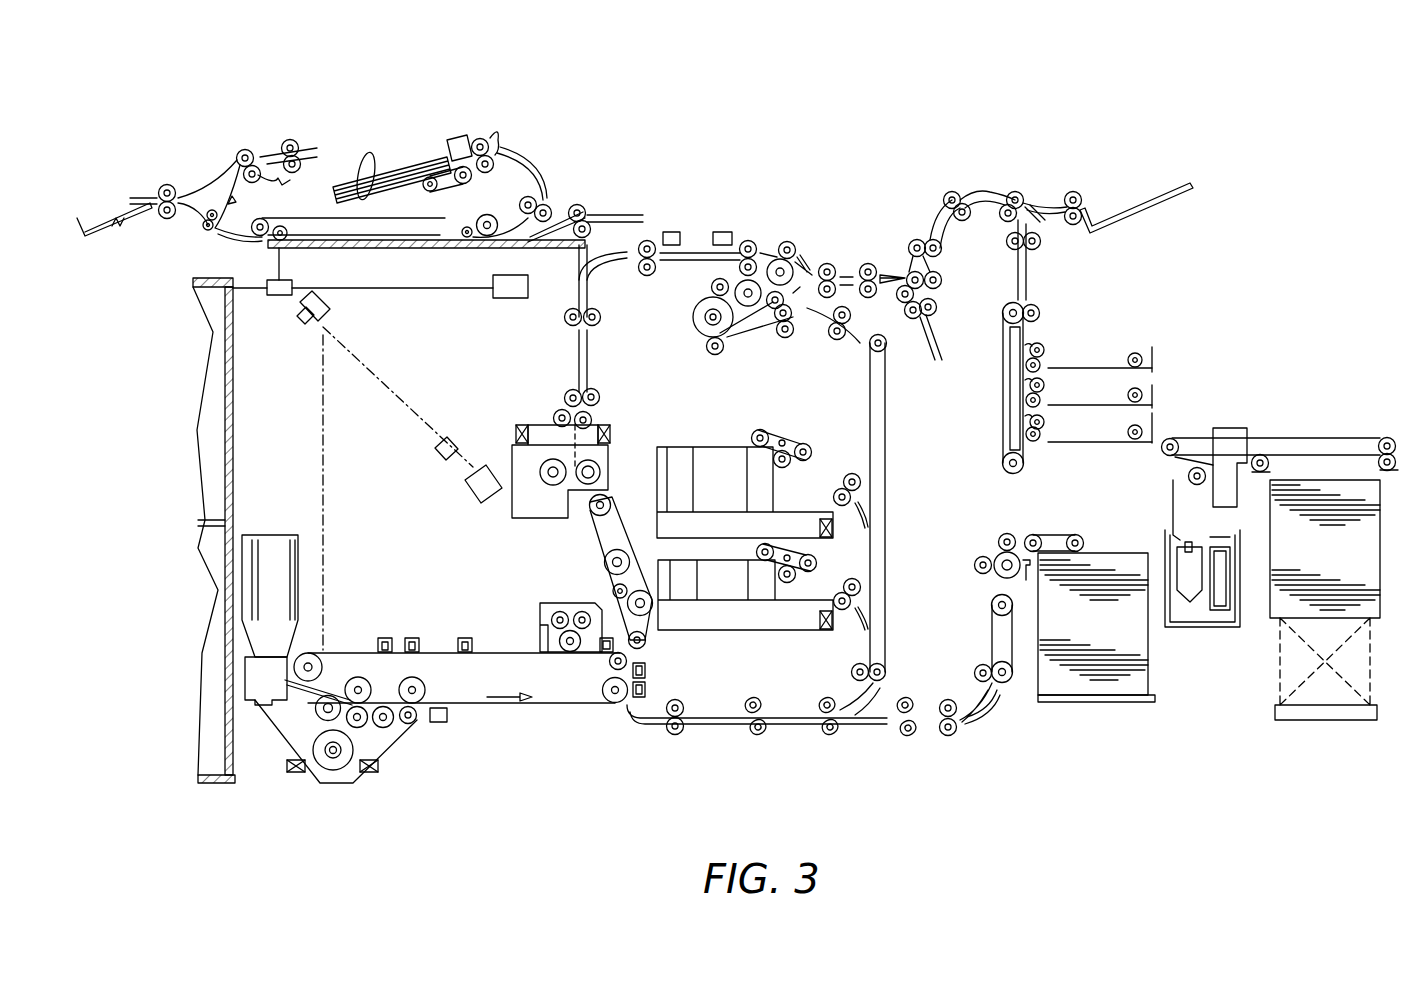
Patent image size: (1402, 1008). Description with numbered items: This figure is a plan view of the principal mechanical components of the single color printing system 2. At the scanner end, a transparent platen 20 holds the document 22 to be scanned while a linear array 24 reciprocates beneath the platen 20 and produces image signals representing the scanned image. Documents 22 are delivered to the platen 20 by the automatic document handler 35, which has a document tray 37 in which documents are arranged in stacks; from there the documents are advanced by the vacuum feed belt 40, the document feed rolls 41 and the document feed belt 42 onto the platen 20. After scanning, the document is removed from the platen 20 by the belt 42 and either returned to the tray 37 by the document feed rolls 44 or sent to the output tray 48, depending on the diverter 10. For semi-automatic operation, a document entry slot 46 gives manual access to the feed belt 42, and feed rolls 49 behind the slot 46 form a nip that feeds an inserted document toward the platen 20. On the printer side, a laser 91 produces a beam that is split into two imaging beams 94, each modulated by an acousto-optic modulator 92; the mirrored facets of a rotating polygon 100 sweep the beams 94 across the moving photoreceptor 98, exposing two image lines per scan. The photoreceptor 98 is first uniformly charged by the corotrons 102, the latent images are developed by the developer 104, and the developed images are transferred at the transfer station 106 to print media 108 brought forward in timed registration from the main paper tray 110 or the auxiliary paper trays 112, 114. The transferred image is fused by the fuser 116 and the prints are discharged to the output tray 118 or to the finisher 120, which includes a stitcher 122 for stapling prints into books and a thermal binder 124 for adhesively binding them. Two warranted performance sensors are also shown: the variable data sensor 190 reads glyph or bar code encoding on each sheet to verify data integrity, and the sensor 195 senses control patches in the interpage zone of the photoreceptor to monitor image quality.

The system 2 is at (740, 145).
The diverter 10 is at (191, 152).
The platen 20 is at (417, 247).
The document 22 is at (370, 178).
The linear array 24 is at (271, 277).
The automatic document handler 35 is at (401, 132).
The document tray 37 is at (372, 197).
The vacuum feed belt 40 is at (472, 180).
The document feed rolls 41 is at (500, 147).
The document feed belt 42 is at (443, 219).
The document feed rolls 44 is at (349, 216).
The document entry slot 46 is at (606, 210).
The output tray 48 is at (142, 213).
The feed rolls 49 is at (578, 207).
The laser 91 is at (473, 488).
The acousto-optic modulator 92 is at (442, 457).
The imaging beams 94 is at (385, 383).
The photoreceptor 98 is at (545, 705).
The rotating polygon 100 is at (312, 325).
The corotrons 102 is at (463, 638).
The developer 104 is at (388, 747).
The transfer station 106 is at (628, 735).
The print media 108 is at (1147, 652).
The main paper tray 110 is at (1093, 702).
The auxiliary paper tray 112 is at (707, 630).
The auxiliary paper tray 114 is at (710, 447).
The fuser 116 is at (613, 413).
The output tray 118 is at (1137, 212).
The finisher 120 is at (1228, 342).
The stitcher 122 is at (1152, 385).
The thermal binder 124 is at (1350, 391).
The variable data sensor 190 is at (672, 232).
The warranted performance sensor 195 is at (438, 722).